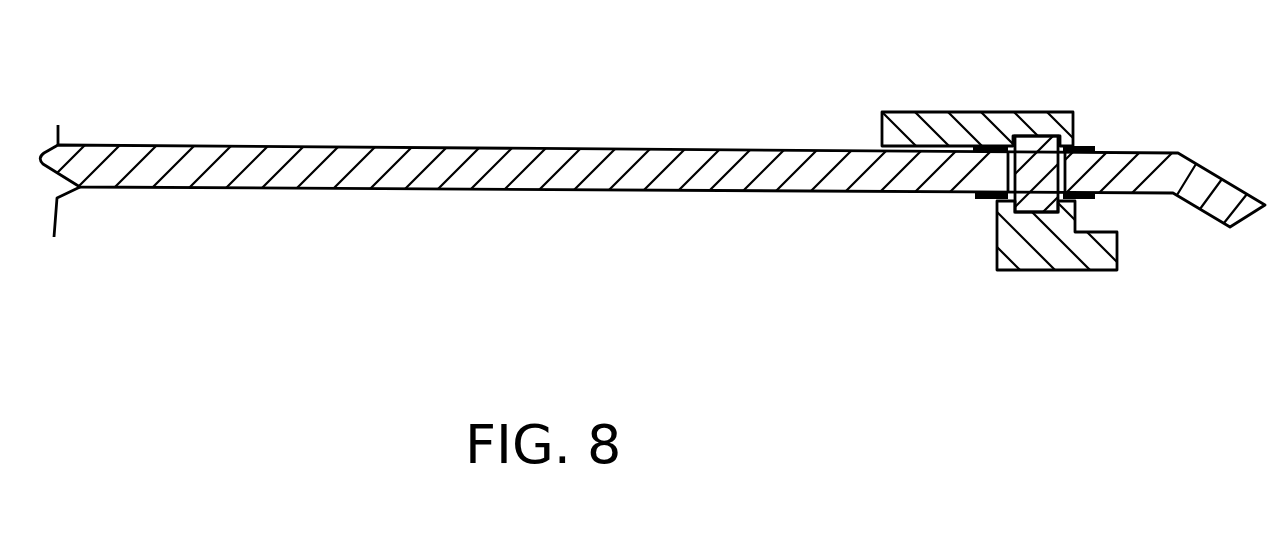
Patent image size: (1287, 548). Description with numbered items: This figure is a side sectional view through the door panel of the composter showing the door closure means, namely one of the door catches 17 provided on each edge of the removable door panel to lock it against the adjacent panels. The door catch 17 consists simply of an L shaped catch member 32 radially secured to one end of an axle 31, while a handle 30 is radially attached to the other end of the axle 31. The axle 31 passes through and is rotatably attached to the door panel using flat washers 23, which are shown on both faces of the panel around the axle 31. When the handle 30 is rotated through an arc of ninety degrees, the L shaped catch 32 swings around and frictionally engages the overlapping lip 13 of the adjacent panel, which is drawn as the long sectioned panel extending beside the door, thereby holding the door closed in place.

The overlapping lip 13 is at (655, 181).
The door catch 17 is at (1035, 42).
The flat washer 23 is at (973, 148).
The handle 30 is at (955, 112).
The axle 31 is at (1042, 135).
The L shaped catch member 32 is at (1052, 270).